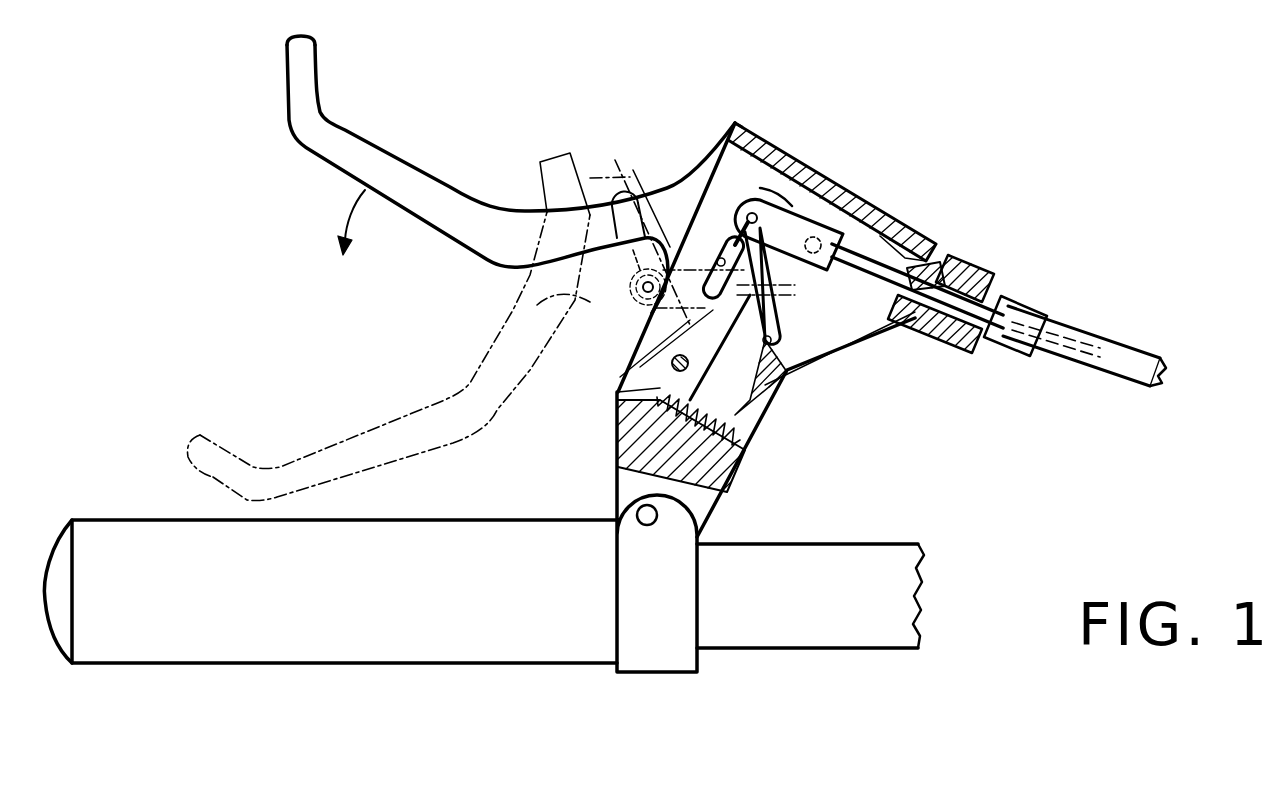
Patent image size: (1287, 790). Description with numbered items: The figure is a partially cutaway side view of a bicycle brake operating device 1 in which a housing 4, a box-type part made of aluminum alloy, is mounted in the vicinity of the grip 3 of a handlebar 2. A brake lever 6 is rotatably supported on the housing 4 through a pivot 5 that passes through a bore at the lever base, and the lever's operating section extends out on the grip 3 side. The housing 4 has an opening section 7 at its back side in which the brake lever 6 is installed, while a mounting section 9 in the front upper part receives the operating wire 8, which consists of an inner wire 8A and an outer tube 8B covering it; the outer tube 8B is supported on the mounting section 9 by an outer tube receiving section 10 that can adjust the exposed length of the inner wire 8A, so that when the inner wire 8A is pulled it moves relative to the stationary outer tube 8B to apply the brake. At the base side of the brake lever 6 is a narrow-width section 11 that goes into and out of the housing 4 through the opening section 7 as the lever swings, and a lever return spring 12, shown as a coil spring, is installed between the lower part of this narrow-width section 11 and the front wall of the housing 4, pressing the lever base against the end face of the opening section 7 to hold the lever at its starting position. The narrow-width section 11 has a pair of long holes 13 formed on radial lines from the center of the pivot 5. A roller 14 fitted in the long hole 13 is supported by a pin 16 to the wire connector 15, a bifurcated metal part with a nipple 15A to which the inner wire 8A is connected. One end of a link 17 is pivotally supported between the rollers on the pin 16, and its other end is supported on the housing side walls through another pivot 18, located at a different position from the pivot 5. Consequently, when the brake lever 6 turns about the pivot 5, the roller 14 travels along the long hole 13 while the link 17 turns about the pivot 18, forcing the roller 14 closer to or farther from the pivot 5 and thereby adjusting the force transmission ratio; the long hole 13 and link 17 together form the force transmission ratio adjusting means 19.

The brake operating device 1 is at (985, 192).
The handlebar 2 is at (838, 633).
The grip 3 is at (600, 493).
The housing 4 is at (780, 400).
The pivot 5 is at (672, 354).
The brake lever 6 is at (443, 197).
The opening section 7 is at (745, 130).
The operating wire 8 is at (1090, 334).
The inner wire 8A is at (927, 247).
The outer tube 8B is at (1135, 352).
The mounting section 9 is at (905, 330).
The adjusting nut 10 is at (987, 272).
The narrow-width section 11 is at (832, 230).
The lever return spring 12 is at (625, 447).
The long hole 13 is at (705, 250).
The roller 14 is at (727, 190).
The wire connector 15 is at (880, 238).
The nipple 15A is at (842, 190).
The pin 16 is at (767, 188).
The link 17 is at (823, 297).
The pivot 18 is at (748, 418).
The force transmission ratio adjusting means 19 is at (743, 413).